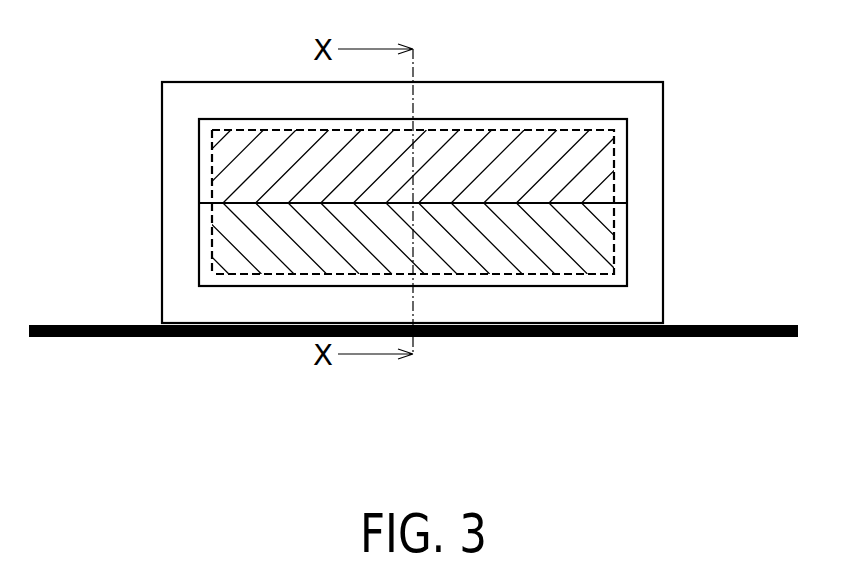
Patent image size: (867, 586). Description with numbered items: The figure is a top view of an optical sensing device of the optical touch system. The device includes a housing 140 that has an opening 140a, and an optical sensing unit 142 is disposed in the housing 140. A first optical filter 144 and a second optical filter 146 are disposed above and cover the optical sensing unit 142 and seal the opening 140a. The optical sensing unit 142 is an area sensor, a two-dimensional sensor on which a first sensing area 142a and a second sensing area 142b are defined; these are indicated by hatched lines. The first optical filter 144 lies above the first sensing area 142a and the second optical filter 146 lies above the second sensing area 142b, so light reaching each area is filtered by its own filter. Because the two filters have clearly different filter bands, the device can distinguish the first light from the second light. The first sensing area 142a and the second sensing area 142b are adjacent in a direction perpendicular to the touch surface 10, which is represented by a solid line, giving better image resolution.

The touch surface 10 is at (756, 326).
The housing 140 is at (645, 276).
The opening 140a is at (628, 151).
The optical sensing unit 142 is at (616, 219).
The first sensing area 142a is at (567, 140).
The second sensing area 142b is at (477, 249).
The first optical filter 144 is at (205, 151).
The second optical filter 146 is at (205, 236).